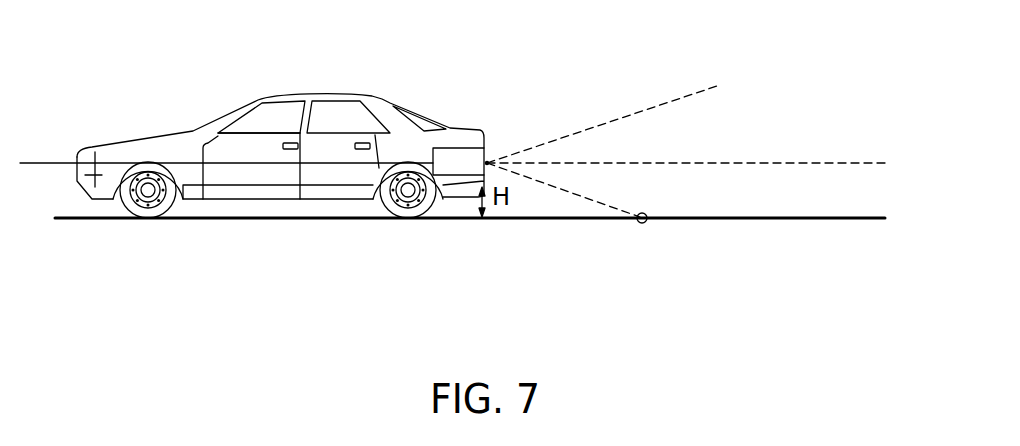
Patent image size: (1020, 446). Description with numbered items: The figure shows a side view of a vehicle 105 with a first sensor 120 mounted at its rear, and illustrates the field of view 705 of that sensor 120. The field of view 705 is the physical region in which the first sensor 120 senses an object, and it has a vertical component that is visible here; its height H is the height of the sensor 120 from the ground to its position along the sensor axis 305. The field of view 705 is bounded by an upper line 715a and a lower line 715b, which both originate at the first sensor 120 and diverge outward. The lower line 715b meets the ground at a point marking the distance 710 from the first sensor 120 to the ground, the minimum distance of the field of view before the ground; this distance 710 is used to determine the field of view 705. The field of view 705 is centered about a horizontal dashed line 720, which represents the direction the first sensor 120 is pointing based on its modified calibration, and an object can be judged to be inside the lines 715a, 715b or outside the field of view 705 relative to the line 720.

The vehicle 105 is at (242, 40).
The sensor axis 305 is at (229, 156).
The first sensor 120 is at (461, 163).
The field of view 705 is at (578, 143).
The line 715a is at (528, 145).
The line 715b is at (544, 190).
The distance 710 is at (633, 223).
The line 720 is at (758, 170).